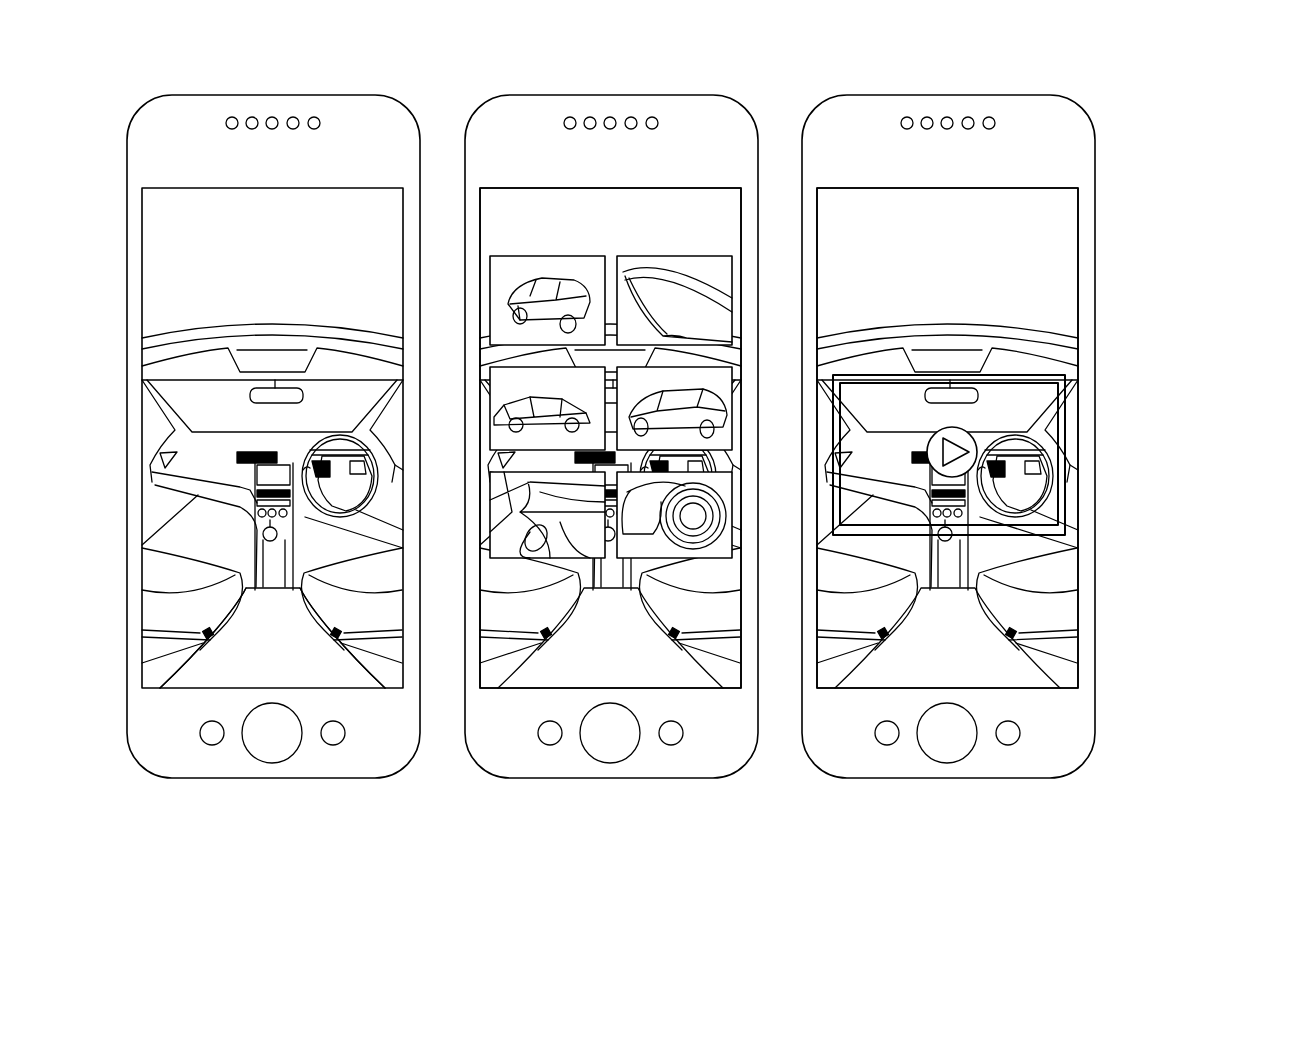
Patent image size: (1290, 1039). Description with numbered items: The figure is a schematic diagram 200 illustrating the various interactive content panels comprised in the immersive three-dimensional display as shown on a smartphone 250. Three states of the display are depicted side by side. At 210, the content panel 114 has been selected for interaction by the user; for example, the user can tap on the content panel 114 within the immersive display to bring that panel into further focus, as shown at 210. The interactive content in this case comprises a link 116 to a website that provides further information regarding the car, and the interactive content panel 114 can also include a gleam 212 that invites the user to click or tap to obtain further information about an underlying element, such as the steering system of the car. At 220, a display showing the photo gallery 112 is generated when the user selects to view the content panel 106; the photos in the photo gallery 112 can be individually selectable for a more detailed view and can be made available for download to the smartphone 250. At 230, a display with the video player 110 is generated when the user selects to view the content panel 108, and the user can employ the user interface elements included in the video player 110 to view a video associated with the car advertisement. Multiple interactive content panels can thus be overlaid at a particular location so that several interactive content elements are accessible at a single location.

The schematic diagram 200 is at (1128, 60).
The smartphone 250 is at (274, 95).
The photo gallery display state 220 is at (610, 778).
The video player display state 230 is at (947, 778).
The content panel 106 is at (540, 225).
The content panel 108 is at (878, 188).
The photo gallery 112 is at (600, 255).
The video player 110 is at (1062, 453).
The gleam 212 is at (335, 483).
The content panel 114 is at (198, 673).
The link 116 is at (270, 613).
The content panel selection state 210 is at (307, 662).